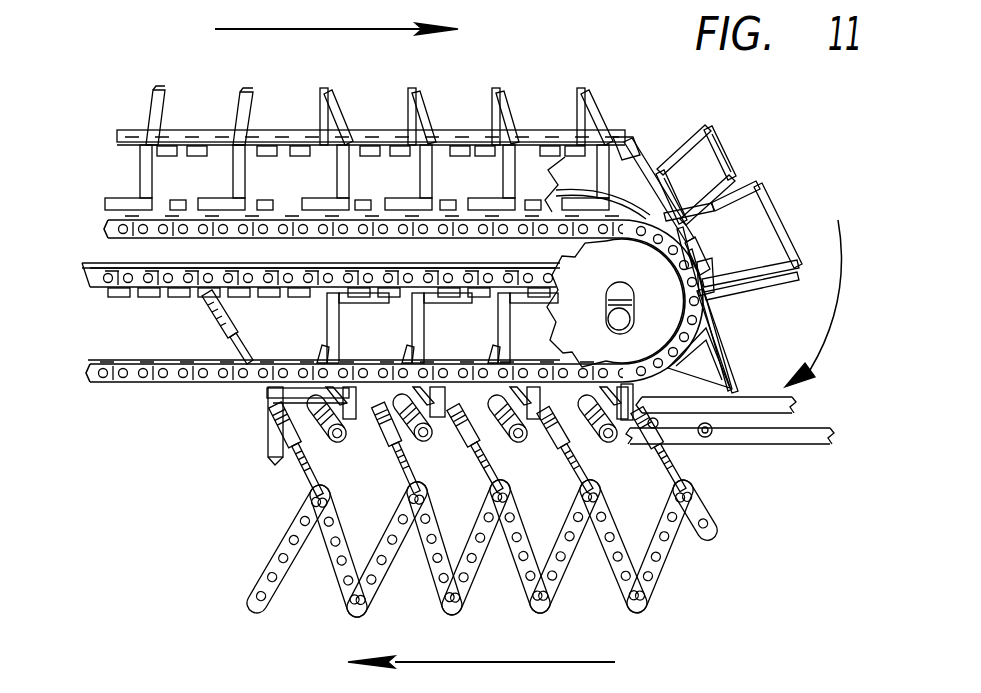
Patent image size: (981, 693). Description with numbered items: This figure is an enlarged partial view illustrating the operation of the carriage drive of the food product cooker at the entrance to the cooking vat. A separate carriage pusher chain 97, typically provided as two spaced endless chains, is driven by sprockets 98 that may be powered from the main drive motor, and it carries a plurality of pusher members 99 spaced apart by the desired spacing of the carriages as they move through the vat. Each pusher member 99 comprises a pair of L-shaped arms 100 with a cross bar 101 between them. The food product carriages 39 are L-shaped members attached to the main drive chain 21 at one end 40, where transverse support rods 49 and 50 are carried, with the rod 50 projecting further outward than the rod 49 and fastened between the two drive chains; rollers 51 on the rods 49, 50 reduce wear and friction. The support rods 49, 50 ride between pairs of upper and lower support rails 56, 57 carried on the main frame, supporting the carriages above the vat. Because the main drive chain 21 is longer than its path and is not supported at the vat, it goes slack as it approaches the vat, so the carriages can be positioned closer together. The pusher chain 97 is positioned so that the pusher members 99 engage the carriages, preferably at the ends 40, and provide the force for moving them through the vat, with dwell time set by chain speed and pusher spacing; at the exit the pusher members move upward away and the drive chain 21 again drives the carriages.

The main drive chain 21 is at (650, 590).
The food product carriage 39 is at (267, 450).
The chain end of product carriage 40 is at (300, 400).
The transverse support rod 49 is at (313, 410).
The transverse support rod 50 is at (307, 482).
The roller 51 is at (277, 421).
The upper support rail 56 is at (793, 392).
The lower support rail 57 is at (810, 428).
The carriage pusher chain 97 is at (136, 285).
The sprocket 98 is at (647, 310).
The pusher member 99 is at (148, 178).
The L-shaped arm 100 is at (688, 168).
The cross bar 101 is at (730, 152).